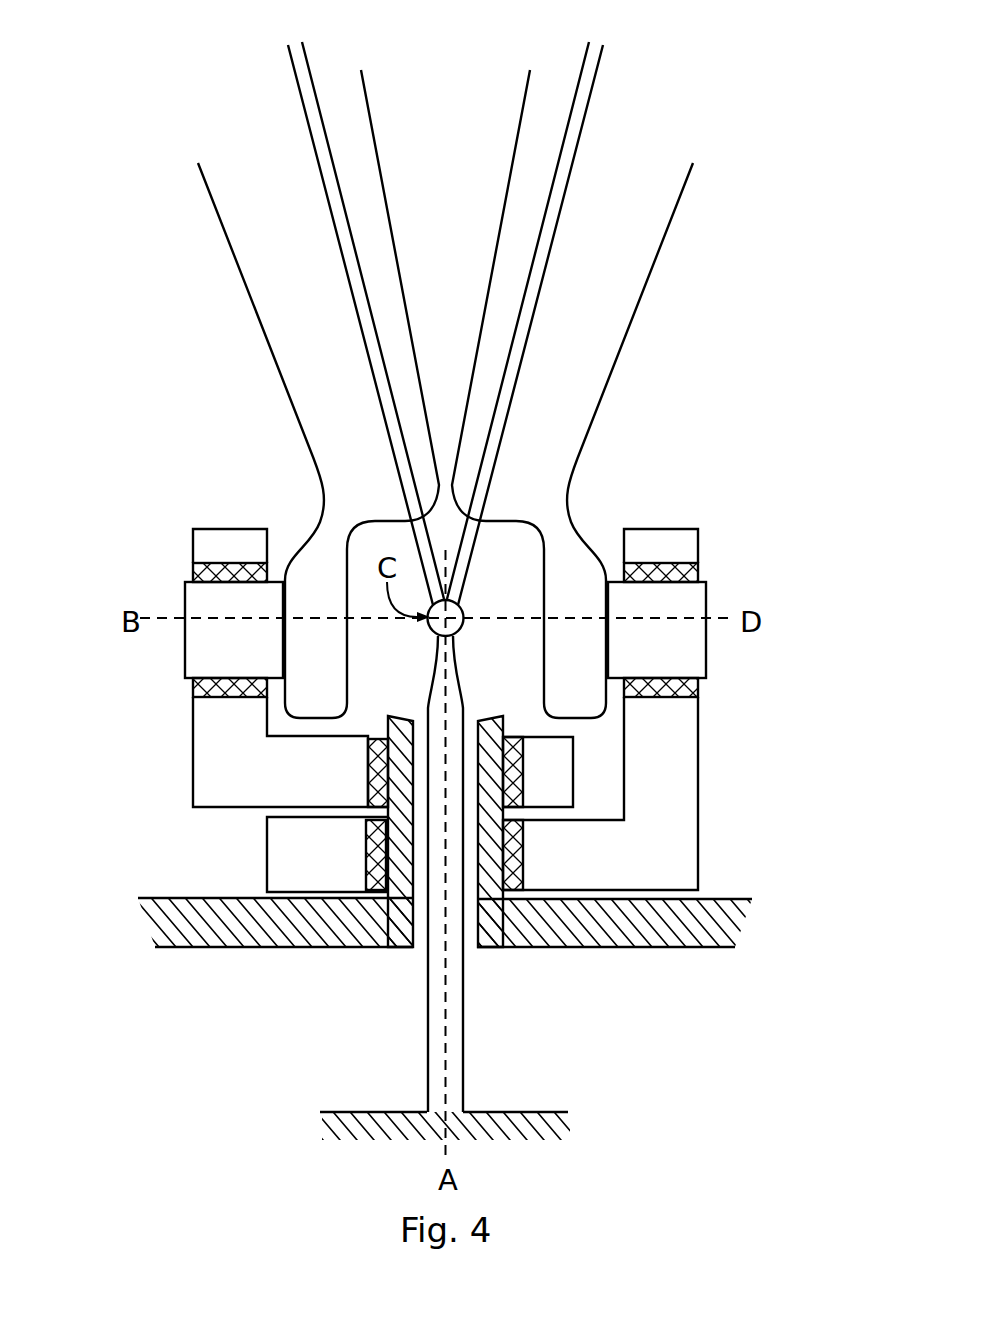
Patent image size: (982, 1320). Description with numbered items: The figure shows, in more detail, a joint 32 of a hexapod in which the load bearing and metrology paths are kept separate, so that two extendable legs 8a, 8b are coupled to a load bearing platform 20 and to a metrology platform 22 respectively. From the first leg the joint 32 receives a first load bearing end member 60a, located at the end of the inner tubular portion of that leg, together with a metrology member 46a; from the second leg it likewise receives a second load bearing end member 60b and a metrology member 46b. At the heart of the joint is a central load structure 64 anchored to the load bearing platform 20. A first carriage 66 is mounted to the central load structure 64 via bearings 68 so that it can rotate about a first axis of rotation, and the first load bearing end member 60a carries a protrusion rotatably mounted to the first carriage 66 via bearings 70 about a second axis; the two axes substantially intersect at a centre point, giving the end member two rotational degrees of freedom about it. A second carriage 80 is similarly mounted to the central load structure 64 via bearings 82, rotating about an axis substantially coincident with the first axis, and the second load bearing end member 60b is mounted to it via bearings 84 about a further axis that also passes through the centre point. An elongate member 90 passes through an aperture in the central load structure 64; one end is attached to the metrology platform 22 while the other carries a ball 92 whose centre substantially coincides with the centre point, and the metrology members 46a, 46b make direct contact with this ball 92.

The metrology member 46a is at (302, 58).
The metrology member 46b is at (592, 78).
The extendable leg 8a is at (292, 394).
The extendable leg 8b is at (593, 394).
The first load bearing end member 60a is at (293, 309).
The second load bearing end member 60b is at (610, 310).
The joint 32 is at (447, 738).
The bearings 70 is at (193, 688).
The bearings 84 is at (700, 690).
The ball 92 is at (476, 601).
The bearings 68 is at (506, 735).
The central load structure 64 is at (482, 718).
The first carriage 66 is at (177, 770).
The second carriage 80 is at (237, 828).
The bearings 82 is at (523, 860).
The load bearing platform 20 is at (727, 961).
The elongate member 90 is at (452, 1038).
The metrology platform 22 is at (586, 1127).